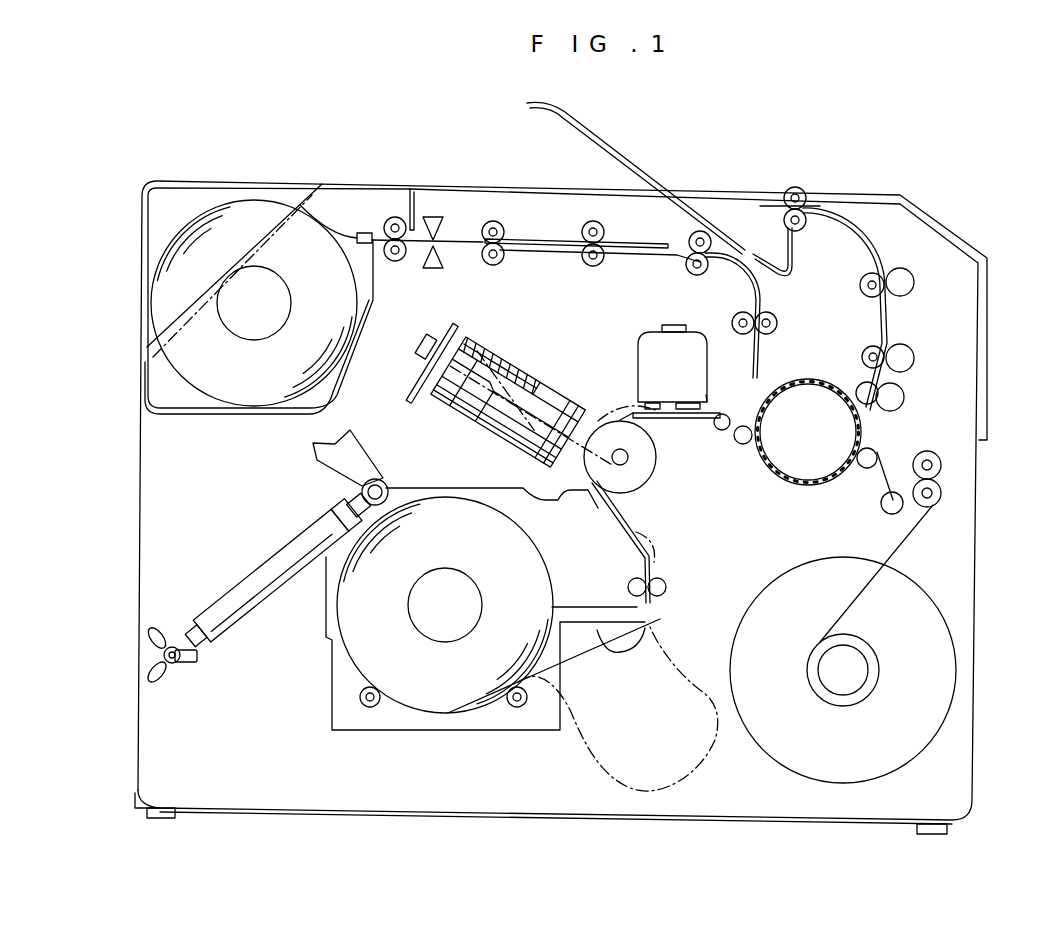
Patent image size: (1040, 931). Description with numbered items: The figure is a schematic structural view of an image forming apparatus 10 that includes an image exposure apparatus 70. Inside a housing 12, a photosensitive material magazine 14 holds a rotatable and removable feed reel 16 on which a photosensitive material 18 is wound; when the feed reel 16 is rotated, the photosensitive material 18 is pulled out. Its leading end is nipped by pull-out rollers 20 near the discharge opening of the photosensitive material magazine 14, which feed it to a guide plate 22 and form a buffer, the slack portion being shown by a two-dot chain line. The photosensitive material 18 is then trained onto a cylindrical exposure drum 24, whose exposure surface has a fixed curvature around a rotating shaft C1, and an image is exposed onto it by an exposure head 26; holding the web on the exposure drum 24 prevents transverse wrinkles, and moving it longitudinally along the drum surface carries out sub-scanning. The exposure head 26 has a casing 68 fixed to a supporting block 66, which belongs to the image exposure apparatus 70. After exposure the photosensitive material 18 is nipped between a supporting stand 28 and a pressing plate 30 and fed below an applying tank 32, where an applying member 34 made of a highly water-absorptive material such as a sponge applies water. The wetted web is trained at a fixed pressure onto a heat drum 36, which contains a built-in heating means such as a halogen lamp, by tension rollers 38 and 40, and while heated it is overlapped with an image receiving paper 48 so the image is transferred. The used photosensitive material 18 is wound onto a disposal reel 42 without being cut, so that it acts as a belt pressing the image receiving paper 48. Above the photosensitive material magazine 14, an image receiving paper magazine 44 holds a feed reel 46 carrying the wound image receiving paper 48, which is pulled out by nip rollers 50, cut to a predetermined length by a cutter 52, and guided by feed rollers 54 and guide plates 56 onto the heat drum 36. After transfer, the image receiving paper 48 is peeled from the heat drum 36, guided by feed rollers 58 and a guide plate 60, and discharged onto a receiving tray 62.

The image forming apparatus 10 is at (933, 206).
The housing 12 is at (975, 555).
The photosensitive material magazine 14 is at (325, 685).
The feed reel 16 is at (445, 635).
The photosensitive material 18 is at (655, 622).
The pull-out rollers 20 is at (662, 580).
The guide plate 22 is at (640, 552).
The exposure drum 24 is at (630, 460).
The exposure head 26 is at (520, 367).
The supporting stand 28 is at (722, 432).
The pressing plate 30 is at (656, 405).
The applying tank 32 is at (690, 328).
The applying member 34 is at (706, 395).
The heat drum 36 is at (862, 430).
The tension roller 38 is at (745, 446).
The tension roller 40 is at (890, 452).
The disposal reel 42 is at (862, 672).
The image receiving paper magazine 44 is at (190, 414).
The feed reel 46 is at (258, 338).
The image receiving paper 48 is at (262, 213).
The nip rollers 50 is at (392, 215).
The cutter 52 is at (437, 215).
The feed rollers 54 is at (593, 222).
The guide plates 56 is at (615, 240).
The rollers 58 is at (880, 345).
The guide plate 60 is at (880, 270).
The receiving tray 62 is at (605, 135).
The supporting block 66 is at (480, 420).
The casing 68 is at (488, 352).
The image exposure apparatus 70 is at (548, 318).
The rotating shaft C1 is at (626, 460).